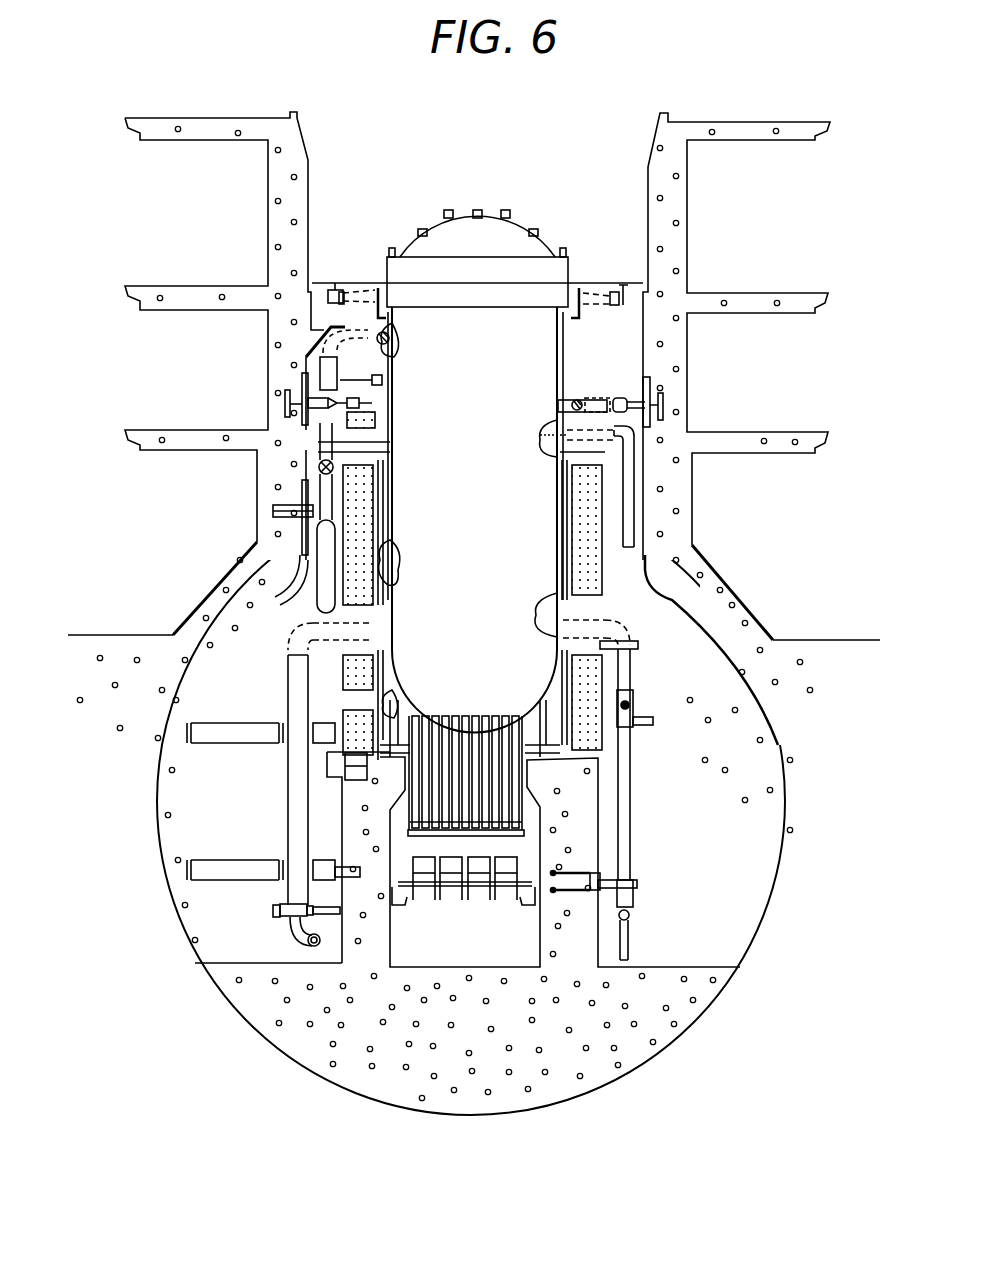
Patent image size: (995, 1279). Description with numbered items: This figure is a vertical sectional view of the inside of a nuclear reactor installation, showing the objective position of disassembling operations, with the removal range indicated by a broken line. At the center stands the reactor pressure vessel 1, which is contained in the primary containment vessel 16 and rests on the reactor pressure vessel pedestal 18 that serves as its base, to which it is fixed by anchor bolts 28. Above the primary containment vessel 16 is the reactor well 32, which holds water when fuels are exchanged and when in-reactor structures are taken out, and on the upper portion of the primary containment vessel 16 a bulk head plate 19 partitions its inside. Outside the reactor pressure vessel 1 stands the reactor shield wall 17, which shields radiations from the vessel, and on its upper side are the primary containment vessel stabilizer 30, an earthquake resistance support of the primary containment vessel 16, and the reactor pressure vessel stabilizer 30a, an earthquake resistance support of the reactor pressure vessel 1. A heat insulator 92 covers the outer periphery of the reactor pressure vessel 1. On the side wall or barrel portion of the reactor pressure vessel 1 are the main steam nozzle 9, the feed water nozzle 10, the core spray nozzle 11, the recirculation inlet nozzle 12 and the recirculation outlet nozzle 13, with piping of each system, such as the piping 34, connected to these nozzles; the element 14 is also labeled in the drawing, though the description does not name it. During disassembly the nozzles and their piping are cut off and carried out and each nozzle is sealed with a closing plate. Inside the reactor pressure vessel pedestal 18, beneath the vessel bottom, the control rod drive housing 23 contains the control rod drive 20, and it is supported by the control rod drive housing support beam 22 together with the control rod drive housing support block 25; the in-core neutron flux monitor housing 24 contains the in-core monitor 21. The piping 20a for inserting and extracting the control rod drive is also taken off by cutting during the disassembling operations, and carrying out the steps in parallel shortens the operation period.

The reactor pressure vessel 1 is at (562, 505).
The main steam nozzle 9 is at (337, 318).
The feed water nozzle 10 is at (598, 402).
The core spray nozzle 11 is at (290, 424).
The recirculation inlet nozzle 12 is at (598, 652).
The recirculation outlet nozzle 13 is at (372, 606).
The piping 14 is at (672, 598).
The primary containment vessel 16 is at (740, 663).
The reactor shield wall 17 is at (598, 562).
The reactor pressure vessel pedestal 18 is at (342, 788).
The bulk head plate 19 is at (615, 282).
The control rod drive 20 is at (507, 835).
The piping for inserting and extracting the control rod drive 20a is at (520, 810).
The in-core monitor 21 is at (475, 835).
The control rod drive housing support beam 22 is at (527, 762).
The control rod drive housing 23 is at (283, 878).
The in-core neutron flux monitor housing 24 is at (503, 780).
The control rod drive housing support block 25 is at (520, 835).
The anchor bolts 28 is at (327, 750).
The primary containment vessel stabilizer 30 is at (650, 393).
The reactor pressure vessel stabilizer 30a is at (578, 402).
The reactor well 32 is at (563, 182).
The piping 34 is at (293, 638).
The heat insulator 92 is at (636, 450).